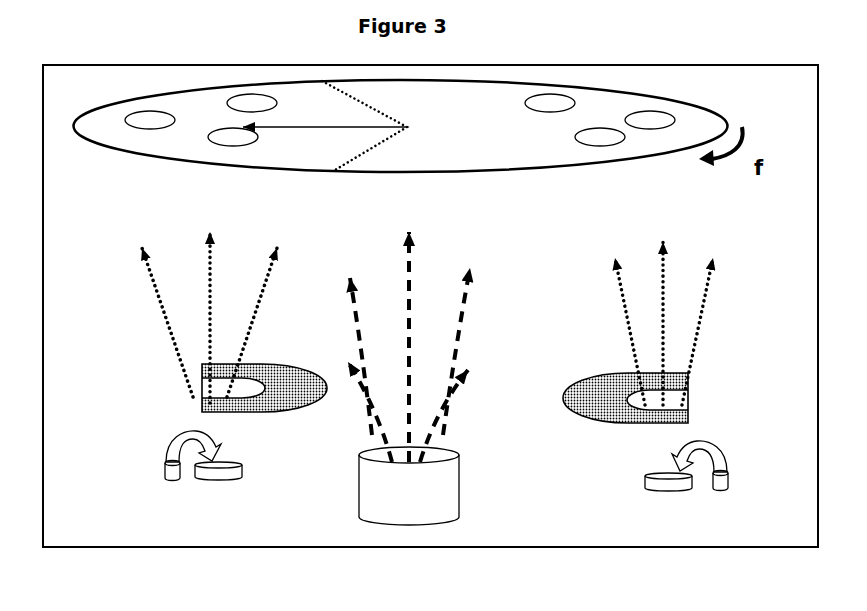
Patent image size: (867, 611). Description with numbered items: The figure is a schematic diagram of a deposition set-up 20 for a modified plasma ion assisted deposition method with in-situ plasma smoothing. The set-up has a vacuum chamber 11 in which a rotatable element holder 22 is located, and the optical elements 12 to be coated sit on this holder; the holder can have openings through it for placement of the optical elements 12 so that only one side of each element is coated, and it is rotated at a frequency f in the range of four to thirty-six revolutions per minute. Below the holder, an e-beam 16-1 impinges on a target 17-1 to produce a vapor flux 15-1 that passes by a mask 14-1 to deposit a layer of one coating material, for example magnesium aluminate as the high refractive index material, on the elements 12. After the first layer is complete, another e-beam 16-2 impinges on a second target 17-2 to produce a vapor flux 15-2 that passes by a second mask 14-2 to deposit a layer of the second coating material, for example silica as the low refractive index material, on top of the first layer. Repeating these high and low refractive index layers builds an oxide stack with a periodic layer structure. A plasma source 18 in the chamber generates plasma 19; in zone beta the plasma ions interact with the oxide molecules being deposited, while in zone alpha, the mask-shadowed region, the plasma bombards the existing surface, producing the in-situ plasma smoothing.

The vacuum chamber 11 is at (580, 547).
The optical elements 12 is at (540, 110).
The mask 14-1 is at (265, 410).
The mask 14-2 is at (628, 427).
The vapor flux 15-1 is at (160, 327).
The vapor flux 15-2 is at (713, 324).
The e-beam 16-1 is at (160, 463).
The e-beam 16-2 is at (733, 475).
The target 17-1 is at (228, 478).
The target 17-2 is at (647, 490).
The plasma source 18 is at (477, 475).
The plasma 19 is at (477, 393).
The deposition set-up 20 is at (391, 146).
The rotatable element holder 22 is at (560, 160).